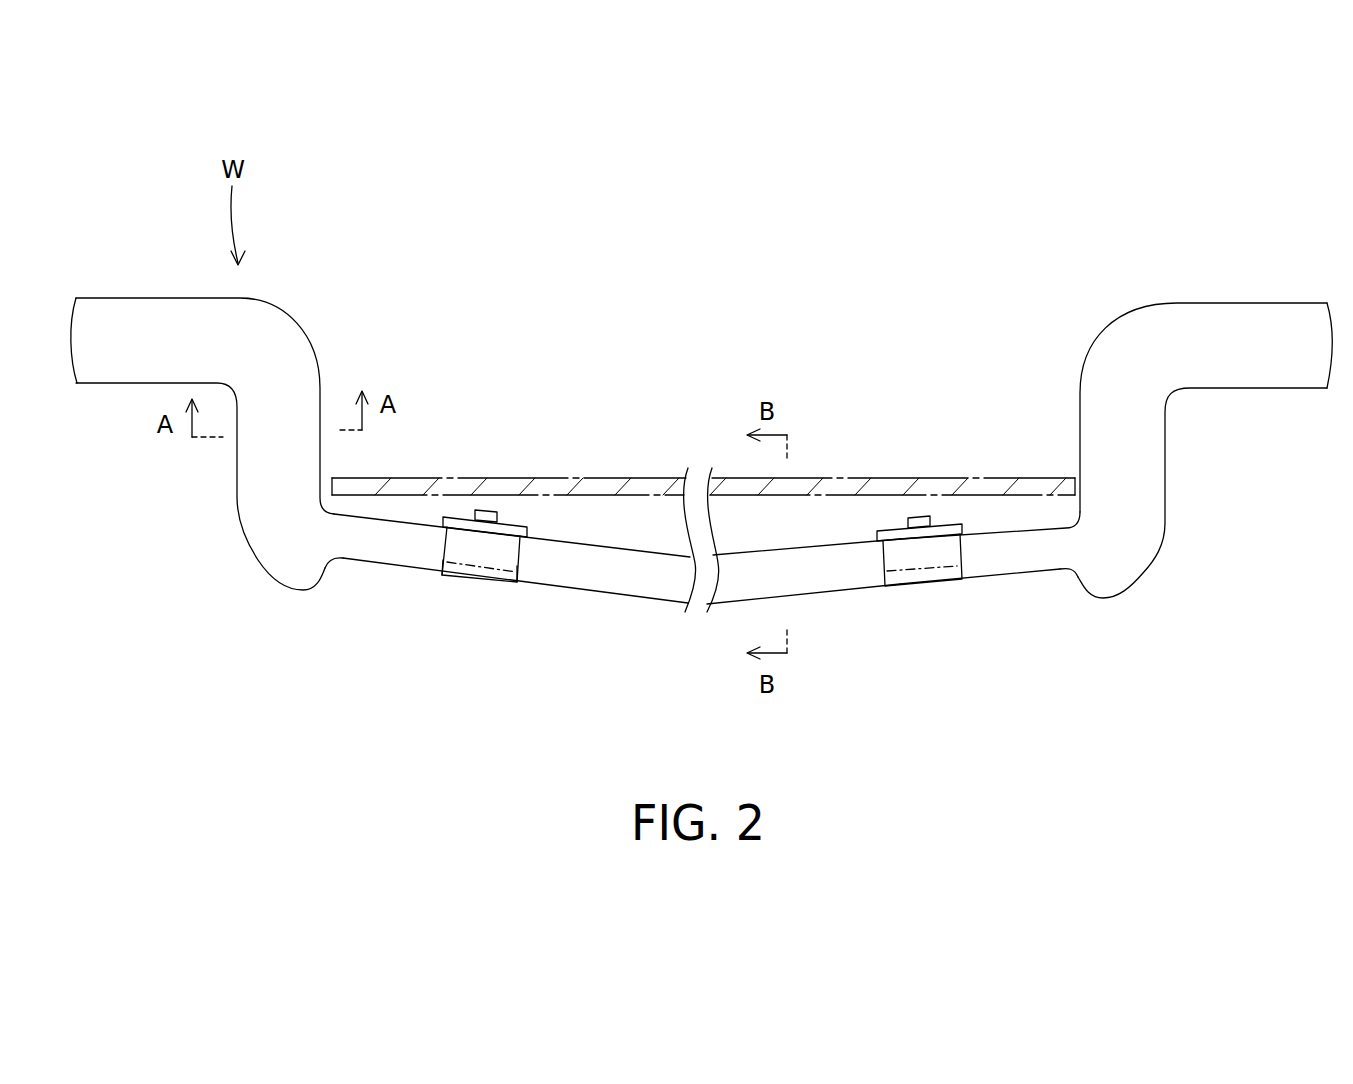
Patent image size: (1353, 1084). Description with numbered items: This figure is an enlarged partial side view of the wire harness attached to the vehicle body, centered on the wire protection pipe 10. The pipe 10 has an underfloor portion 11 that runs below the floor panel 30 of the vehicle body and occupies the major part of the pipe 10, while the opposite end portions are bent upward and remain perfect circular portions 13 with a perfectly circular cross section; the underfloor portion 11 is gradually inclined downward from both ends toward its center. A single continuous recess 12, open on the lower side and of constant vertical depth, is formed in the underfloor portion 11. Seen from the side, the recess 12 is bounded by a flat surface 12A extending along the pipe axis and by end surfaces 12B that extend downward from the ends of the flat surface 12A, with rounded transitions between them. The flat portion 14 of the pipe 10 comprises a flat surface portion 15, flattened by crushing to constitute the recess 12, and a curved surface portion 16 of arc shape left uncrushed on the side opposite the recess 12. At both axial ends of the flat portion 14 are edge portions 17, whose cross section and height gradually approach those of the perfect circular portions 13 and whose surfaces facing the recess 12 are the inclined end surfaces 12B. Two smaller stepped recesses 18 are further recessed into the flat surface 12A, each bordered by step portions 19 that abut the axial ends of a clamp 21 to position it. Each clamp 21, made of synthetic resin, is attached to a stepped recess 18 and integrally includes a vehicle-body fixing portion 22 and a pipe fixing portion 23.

The pipe 10 is at (285, 348).
The underfloor portion 11 is at (630, 588).
The recess 12 is at (1043, 573).
The flat surface 12A is at (830, 593).
The end surfaces 12B is at (337, 573).
The perfect circular portions 13 is at (1117, 357).
The flat portion 14 is at (815, 560).
The flat surface portion 15 is at (1025, 535).
The curved surface portion 16 is at (1007, 558).
The edge portions 17 is at (327, 542).
The stepped recesses 18 is at (480, 570).
The step portions 19 is at (444, 574).
The clamps 21 is at (918, 550).
The vehicle-body fixing portion 22 is at (487, 510).
The pipe fixing portion 23 is at (502, 552).
The floor panel 30 is at (635, 483).